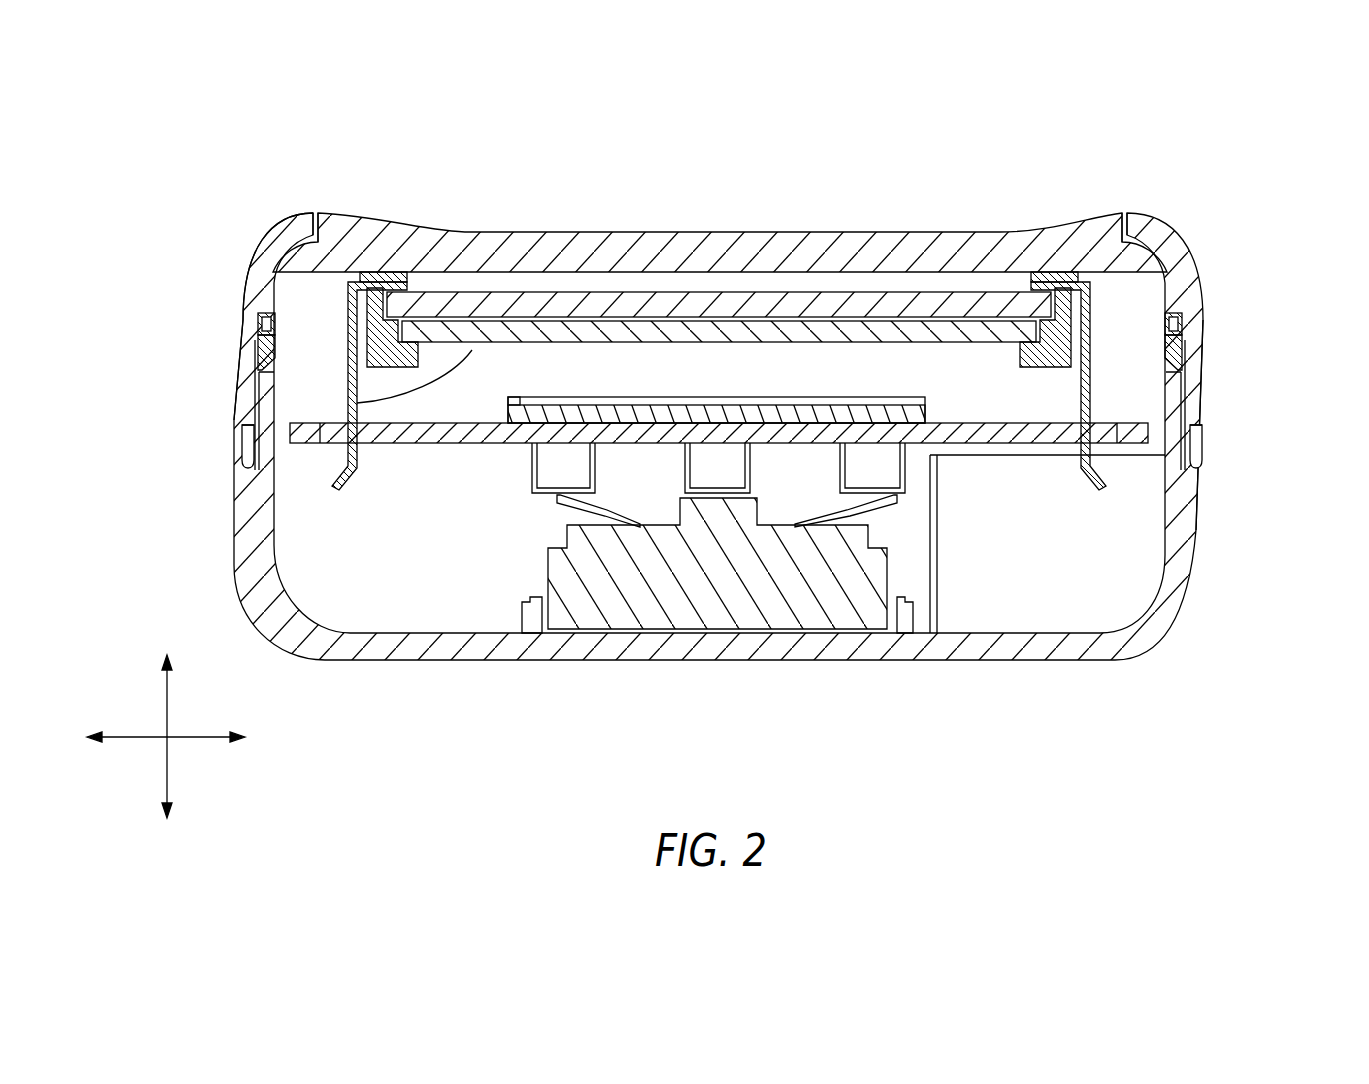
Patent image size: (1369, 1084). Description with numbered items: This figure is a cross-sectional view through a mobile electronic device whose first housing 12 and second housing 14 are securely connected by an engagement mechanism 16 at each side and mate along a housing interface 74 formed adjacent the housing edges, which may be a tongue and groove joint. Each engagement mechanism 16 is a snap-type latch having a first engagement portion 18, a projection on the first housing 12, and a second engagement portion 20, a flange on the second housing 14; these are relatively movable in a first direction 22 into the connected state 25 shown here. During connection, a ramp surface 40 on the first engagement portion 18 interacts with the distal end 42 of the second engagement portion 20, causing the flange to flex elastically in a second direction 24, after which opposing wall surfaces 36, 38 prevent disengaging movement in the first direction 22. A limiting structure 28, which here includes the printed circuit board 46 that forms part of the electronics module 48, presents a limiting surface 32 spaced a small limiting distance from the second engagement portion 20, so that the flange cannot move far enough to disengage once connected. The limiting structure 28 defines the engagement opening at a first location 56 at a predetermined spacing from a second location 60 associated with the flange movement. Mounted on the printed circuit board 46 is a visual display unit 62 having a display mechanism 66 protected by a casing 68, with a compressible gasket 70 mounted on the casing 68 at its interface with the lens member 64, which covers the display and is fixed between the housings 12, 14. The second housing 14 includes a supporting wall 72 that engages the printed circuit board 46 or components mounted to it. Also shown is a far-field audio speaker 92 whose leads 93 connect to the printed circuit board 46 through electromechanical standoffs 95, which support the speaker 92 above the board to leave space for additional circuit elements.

The first housing 12 is at (311, 218).
The second housing 14 is at (283, 632).
The engagement mechanism 16 is at (1308, 366).
The first engagement portion 18 is at (1193, 350).
The second engagement portion 20 is at (1184, 380).
The first direction 22 is at (167, 705).
The second direction 24 is at (125, 738).
The connected state 25 is at (1153, 303).
The limiting structure 28 is at (373, 477).
The limiting surface 32 is at (1148, 435).
The opposing wall surface 36 is at (1185, 352).
The opposing wall surface 38 is at (1180, 330).
The ramp surface 40 is at (1187, 367).
The distal end 42 is at (1172, 311).
The printed circuit board 46 is at (467, 443).
The electronics module 48 is at (453, 403).
The first location 56 is at (1133, 372).
The second location 60 is at (1226, 448).
The visual display unit 62 is at (800, 288).
The lens member 64 is at (897, 238).
The display mechanism 66 is at (560, 297).
The casing 68 is at (472, 350).
The compressible gasket 70 is at (1082, 285).
The wall 72 is at (1055, 565).
The housing interface 74 is at (1217, 423).
The far-field audio speaker 92 is at (657, 625).
The leads 93 is at (817, 513).
The electromechanical standoffs 95 is at (897, 495).